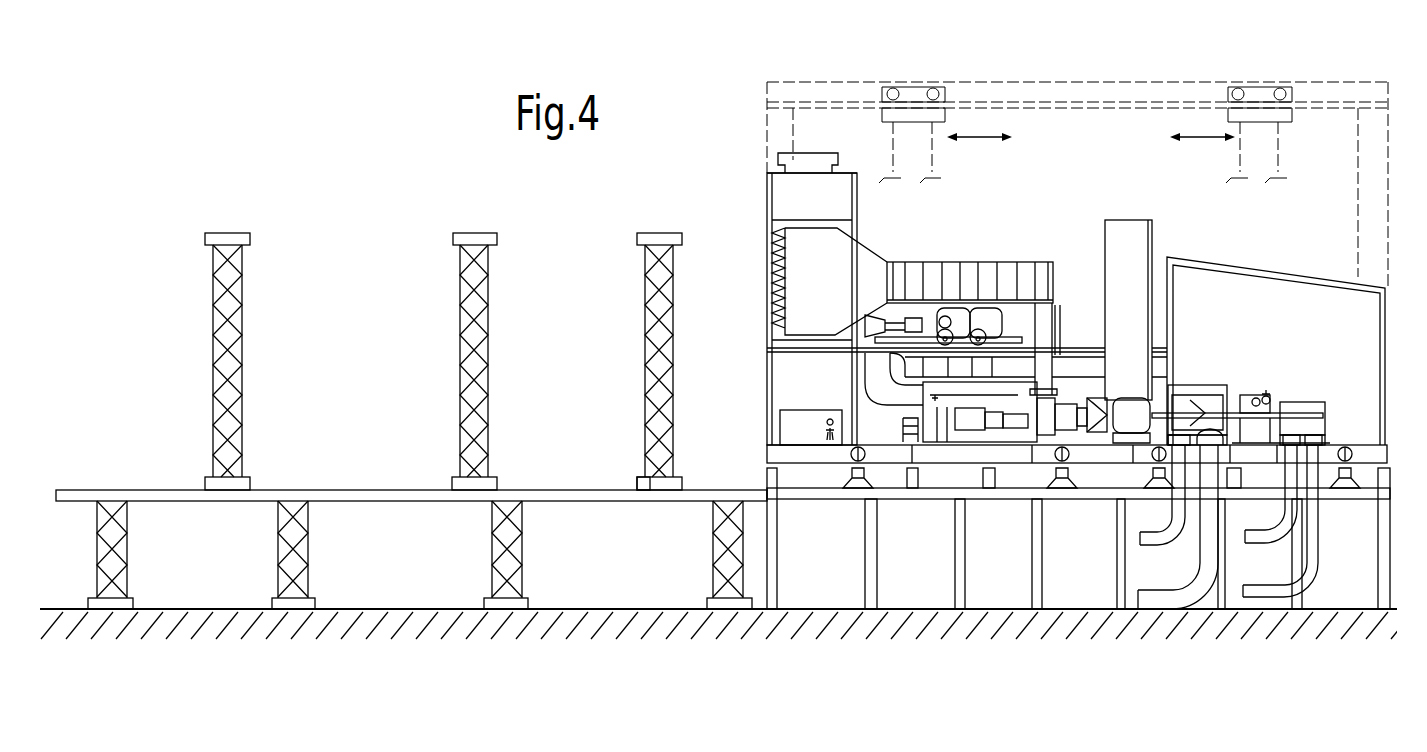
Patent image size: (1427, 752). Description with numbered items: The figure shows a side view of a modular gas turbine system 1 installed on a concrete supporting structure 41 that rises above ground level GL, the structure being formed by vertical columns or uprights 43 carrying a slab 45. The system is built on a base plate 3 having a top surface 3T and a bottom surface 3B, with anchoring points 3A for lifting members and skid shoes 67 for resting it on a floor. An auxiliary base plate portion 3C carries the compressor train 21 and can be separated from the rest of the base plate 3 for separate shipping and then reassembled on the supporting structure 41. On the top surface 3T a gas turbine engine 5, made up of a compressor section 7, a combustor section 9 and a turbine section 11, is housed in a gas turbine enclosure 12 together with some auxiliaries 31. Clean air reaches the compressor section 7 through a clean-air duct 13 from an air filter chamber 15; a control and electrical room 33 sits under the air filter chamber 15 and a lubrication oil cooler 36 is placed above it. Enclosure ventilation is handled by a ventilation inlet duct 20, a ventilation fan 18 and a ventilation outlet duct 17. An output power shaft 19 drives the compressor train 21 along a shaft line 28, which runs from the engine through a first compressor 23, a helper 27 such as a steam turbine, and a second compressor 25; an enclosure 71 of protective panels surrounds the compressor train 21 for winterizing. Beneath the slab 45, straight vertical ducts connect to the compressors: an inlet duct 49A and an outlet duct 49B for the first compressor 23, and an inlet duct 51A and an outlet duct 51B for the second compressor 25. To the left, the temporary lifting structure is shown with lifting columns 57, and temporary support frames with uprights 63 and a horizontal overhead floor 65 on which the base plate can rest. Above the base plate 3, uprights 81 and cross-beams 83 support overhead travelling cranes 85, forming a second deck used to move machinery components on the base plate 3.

The modular gas turbine system 1 is at (1187, 210).
The base plate 3 is at (782, 452).
The anchoring points 3A is at (867, 458).
The bottom surface 3B is at (828, 466).
The auxiliary base plate portion 3C is at (1253, 455).
The top surface 3T is at (793, 440).
The gas turbine engine 5 is at (1080, 450).
The compressor section 7 is at (1037, 448).
The combustor section 9 is at (1097, 398).
The turbine section 11 is at (1128, 403).
The gas turbine enclosure 12 is at (925, 400).
The clean-air duct 13 is at (957, 268).
The air filter chamber 15 is at (803, 287).
The ventilation outlet duct 17 is at (1105, 260).
The ventilation fan 18 is at (1070, 362).
The output power shaft 19 is at (1135, 444).
The ventilation inlet duct 20 is at (870, 330).
The compressor train 21 is at (1258, 382).
The first compressor 23 is at (1197, 407).
The second compressor 25 is at (1315, 402).
The helper 27 is at (1248, 410).
The shaft line 28 is at (1275, 405).
The auxiliaries 31 is at (975, 451).
The control and electrical room 33 is at (780, 420).
The lubrication oil cooler 36 is at (815, 163).
The supporting structure 41 is at (1058, 585).
The vertical columns or uprights 43 is at (778, 571).
The slab 45 is at (1323, 497).
The inlet duct 49A is at (1190, 595).
The outlet duct 49B is at (1172, 530).
The inlet duct 51A is at (1312, 565).
The outlet duct 51B is at (1275, 530).
The lifting columns 57 is at (245, 238).
The uprights 63 is at (112, 562).
The horizontal overhead floor 65 is at (400, 490).
The skid shoes 67 is at (917, 480).
The enclosure 71 is at (1255, 272).
The uprights 81 is at (1360, 158).
The cross-beams 83 is at (1073, 83).
The overhead travelling cranes 85 is at (915, 83).
The ground level GL is at (1070, 608).